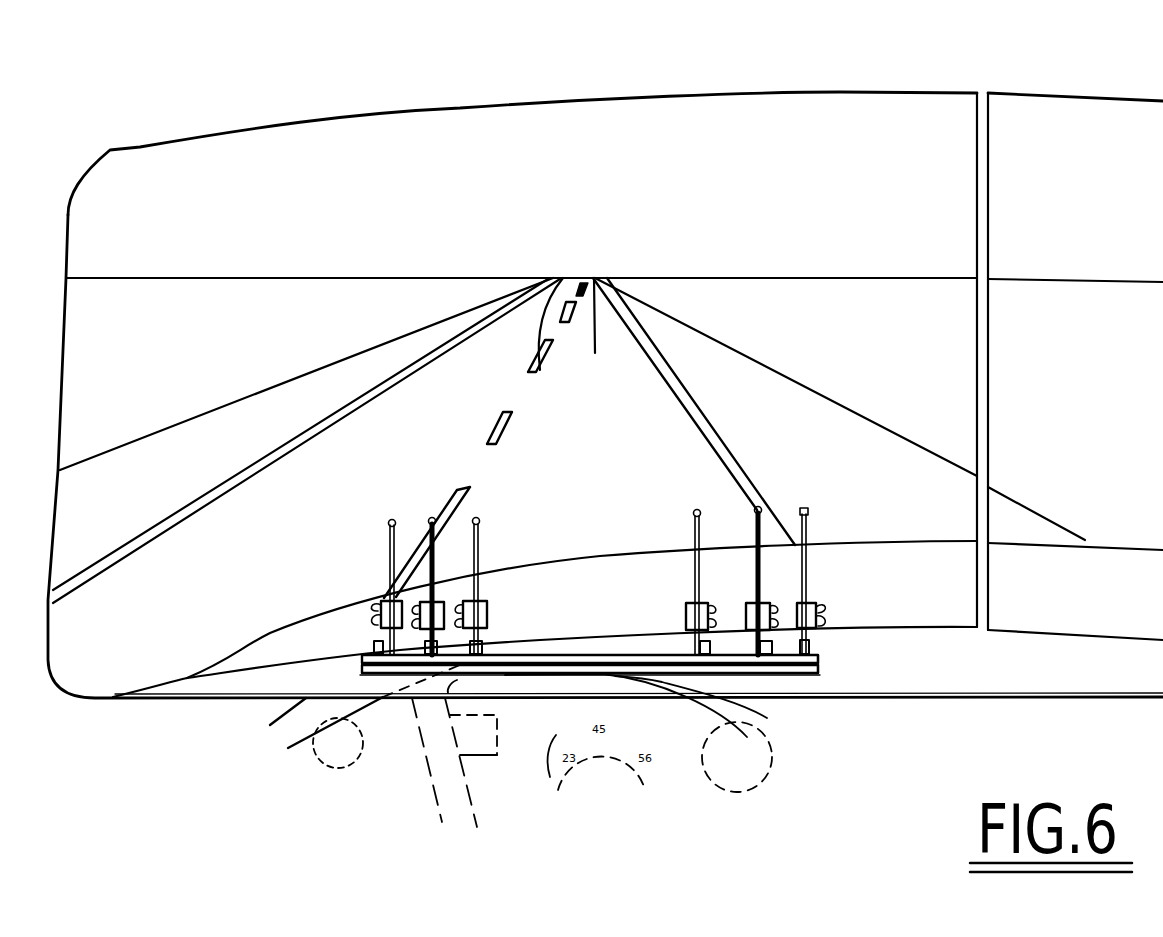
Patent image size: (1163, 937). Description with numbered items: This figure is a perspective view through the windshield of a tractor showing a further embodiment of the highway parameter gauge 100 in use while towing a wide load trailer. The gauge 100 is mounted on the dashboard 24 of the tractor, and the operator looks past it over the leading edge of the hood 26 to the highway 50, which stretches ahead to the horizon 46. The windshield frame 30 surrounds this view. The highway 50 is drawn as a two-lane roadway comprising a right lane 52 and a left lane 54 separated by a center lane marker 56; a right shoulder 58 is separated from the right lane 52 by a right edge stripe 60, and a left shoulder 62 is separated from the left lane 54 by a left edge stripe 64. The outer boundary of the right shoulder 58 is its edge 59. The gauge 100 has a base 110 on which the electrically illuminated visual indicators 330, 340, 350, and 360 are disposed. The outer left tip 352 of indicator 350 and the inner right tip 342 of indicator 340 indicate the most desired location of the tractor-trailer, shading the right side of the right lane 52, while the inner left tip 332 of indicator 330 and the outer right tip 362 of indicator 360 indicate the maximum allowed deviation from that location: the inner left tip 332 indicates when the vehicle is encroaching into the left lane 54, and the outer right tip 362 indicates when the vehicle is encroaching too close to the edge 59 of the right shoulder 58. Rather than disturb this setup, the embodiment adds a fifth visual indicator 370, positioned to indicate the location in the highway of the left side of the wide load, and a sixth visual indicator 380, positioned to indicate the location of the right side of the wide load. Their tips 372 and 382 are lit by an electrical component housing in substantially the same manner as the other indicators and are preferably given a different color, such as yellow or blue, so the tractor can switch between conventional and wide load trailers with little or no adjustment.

The windshield 30 is at (770, 153).
The horizon 46 is at (675, 278).
The highway 50 is at (590, 245).
The right lane 52 is at (597, 278).
The center lane marker 56 is at (566, 278).
The left lane 54 is at (483, 365).
The left shoulder 62 is at (330, 383).
The left edge stripe 64 is at (315, 440).
The right shoulder 58 is at (737, 375).
The edge of shoulder 59 is at (840, 400).
The right edge stripe 60 is at (718, 447).
The hood 26 is at (603, 595).
The dashboard 24 is at (830, 670).
The parameter gauge 100 is at (838, 608).
The base 110 is at (793, 672).
The electrically illuminated visual indicator 330 is at (480, 550).
The inner left tip 332 is at (478, 519).
The electrically illuminated visual indicator 340 is at (697, 575).
The inner right tip 342 is at (696, 510).
The electrically illuminated visual indicator 350 is at (436, 521).
The outer left tip 352 is at (429, 518).
The electrically illuminated visual indicator 360 is at (747, 535).
The outer right tip 362 is at (759, 507).
The fifth visual indicator 370 is at (387, 570).
The tip of fifth visual indicator 372 is at (389, 521).
The sixth visual indicator 380 is at (812, 558).
The tip of sixth visual indicator 382 is at (809, 510).